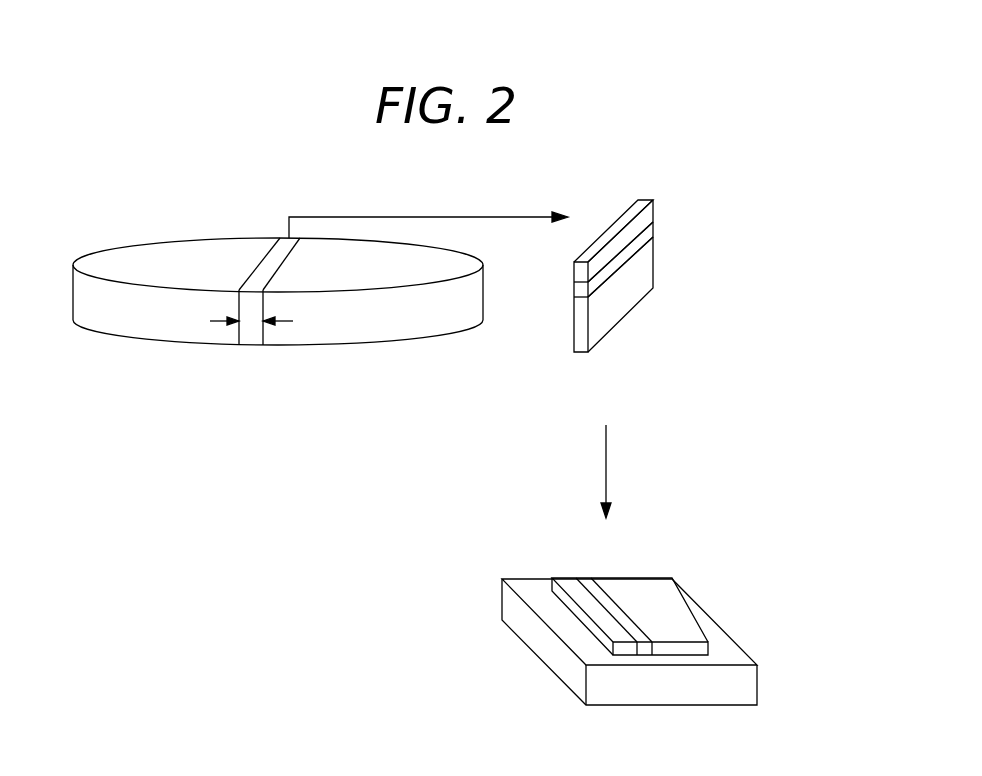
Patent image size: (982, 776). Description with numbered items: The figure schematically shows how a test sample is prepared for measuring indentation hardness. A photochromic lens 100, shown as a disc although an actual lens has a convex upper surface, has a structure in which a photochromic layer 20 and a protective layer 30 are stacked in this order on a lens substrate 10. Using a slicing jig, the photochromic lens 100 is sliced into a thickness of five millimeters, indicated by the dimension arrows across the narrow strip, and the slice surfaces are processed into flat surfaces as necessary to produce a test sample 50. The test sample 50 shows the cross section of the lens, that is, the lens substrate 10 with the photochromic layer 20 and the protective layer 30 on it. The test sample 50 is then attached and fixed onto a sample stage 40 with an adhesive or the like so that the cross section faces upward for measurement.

The photochromic lens 100 is at (193, 250).
The test sample 50 is at (565, 312).
The protective layer 30 is at (650, 209).
The photochromic layer 20 is at (649, 228).
The lens substrate 10 is at (650, 268).
The sample stage 40 is at (758, 685).